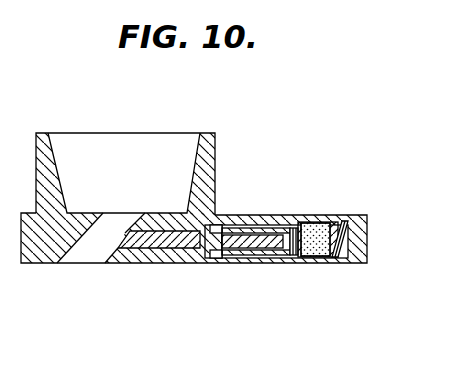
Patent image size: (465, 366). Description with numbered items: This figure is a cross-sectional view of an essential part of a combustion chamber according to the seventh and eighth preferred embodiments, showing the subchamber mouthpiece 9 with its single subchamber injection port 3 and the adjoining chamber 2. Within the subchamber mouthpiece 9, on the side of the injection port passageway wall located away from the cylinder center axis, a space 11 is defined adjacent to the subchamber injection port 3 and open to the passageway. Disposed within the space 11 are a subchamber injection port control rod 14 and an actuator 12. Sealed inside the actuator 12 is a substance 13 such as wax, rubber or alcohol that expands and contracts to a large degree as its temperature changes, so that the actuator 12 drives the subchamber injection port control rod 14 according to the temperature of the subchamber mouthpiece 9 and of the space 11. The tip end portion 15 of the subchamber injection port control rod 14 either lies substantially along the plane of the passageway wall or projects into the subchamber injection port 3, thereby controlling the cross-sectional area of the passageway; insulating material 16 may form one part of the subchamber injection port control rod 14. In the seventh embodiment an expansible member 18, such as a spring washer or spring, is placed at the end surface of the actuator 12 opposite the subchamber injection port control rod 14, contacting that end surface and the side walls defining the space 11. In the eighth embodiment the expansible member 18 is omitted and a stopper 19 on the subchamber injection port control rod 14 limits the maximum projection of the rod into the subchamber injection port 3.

The cup cavity 2 is at (178, 147).
The subchamber injection port 3 is at (82, 250).
The subchamber mouthpiece 9 is at (208, 163).
The space 11 is at (283, 262).
The actuator 12 is at (243, 268).
The substance 13 is at (317, 262).
The subchamber injection port control rod 14 is at (163, 255).
The tip end portion 15 is at (128, 252).
The insulating material 16 is at (196, 250).
The expansible member 18 is at (367, 227).
The stopper 19 is at (235, 213).